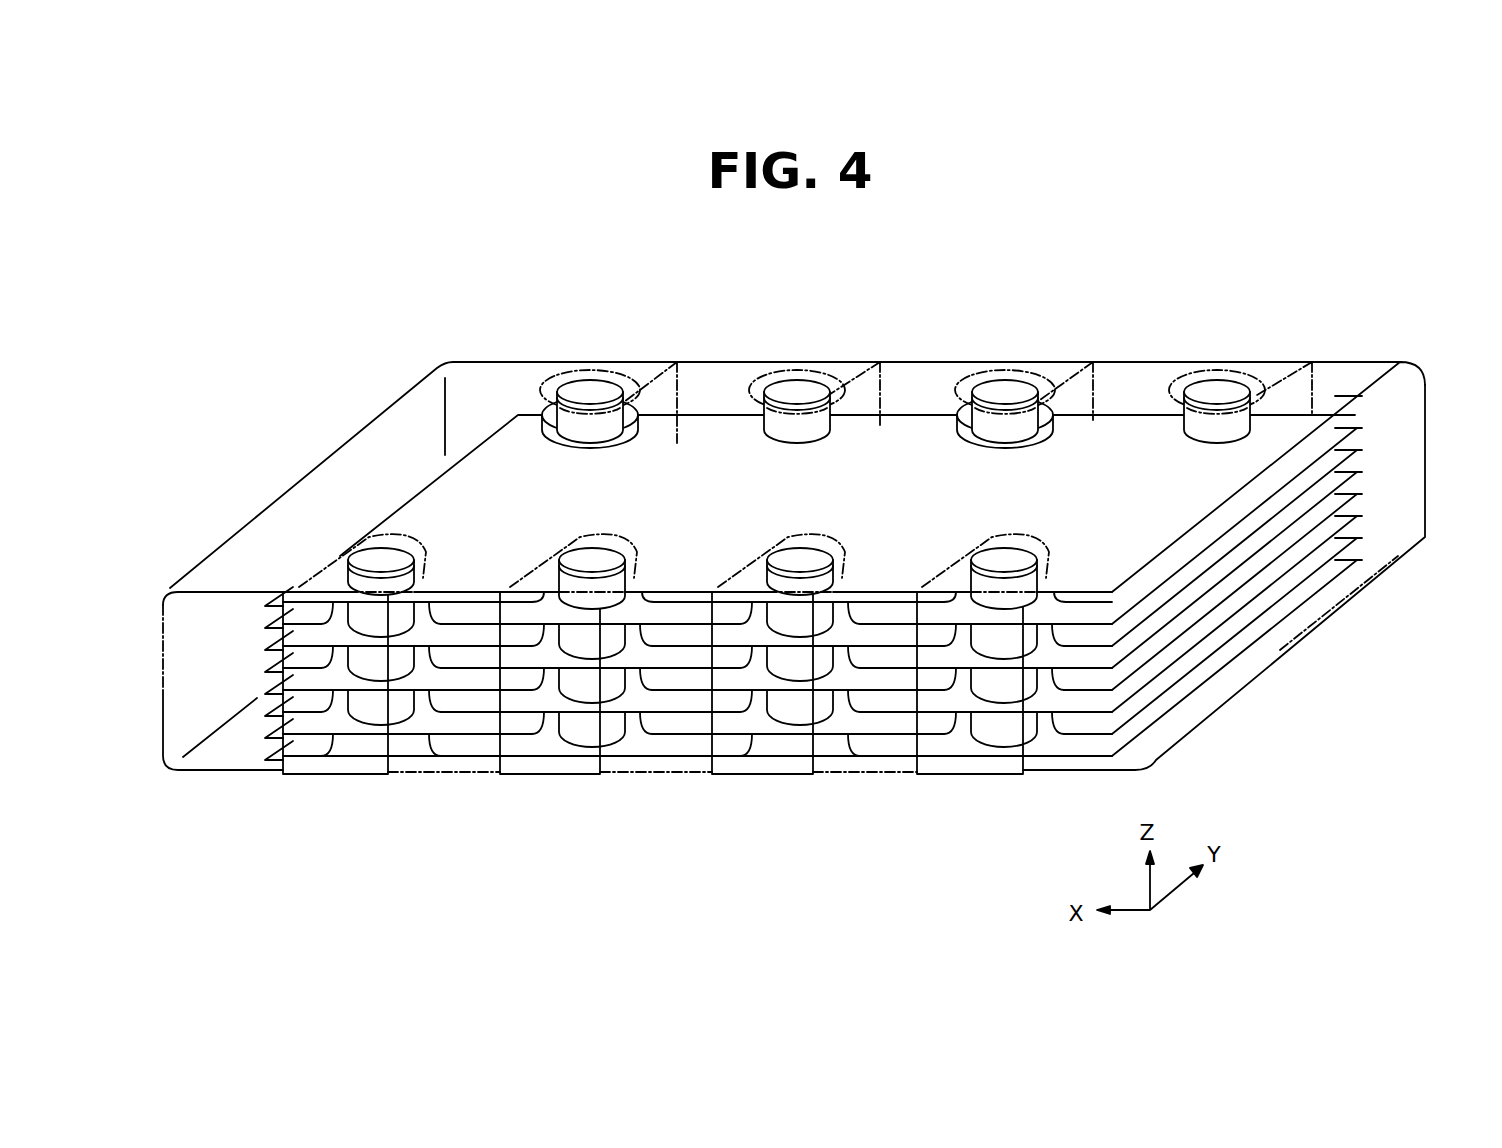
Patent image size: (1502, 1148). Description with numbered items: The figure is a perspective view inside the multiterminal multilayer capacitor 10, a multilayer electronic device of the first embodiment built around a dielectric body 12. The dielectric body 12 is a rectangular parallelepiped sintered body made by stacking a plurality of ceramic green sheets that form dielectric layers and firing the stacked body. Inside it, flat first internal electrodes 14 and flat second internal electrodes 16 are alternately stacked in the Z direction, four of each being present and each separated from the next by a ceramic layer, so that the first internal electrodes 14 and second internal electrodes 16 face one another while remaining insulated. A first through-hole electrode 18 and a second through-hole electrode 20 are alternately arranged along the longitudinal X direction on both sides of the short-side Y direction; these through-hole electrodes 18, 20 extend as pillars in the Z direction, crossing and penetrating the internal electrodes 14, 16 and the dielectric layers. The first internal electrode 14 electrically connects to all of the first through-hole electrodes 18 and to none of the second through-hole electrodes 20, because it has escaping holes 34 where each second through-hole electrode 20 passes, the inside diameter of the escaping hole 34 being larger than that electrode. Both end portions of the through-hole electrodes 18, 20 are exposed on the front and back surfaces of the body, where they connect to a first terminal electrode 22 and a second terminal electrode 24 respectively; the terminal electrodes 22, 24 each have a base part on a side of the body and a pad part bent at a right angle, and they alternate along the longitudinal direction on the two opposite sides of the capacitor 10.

The multiterminal multilayer capacitor 10 is at (1195, 340).
The dielectric body 12 is at (690, 360).
The first internal electrode 14 is at (1332, 553).
The second internal electrode 16 is at (1210, 660).
The first through-hole electrode 18 is at (805, 560).
The second through-hole electrode 20 is at (1012, 560).
The first terminal electrode 22 is at (745, 777).
The second terminal electrode 24 is at (947, 777).
The escaping hole 34 is at (608, 438).